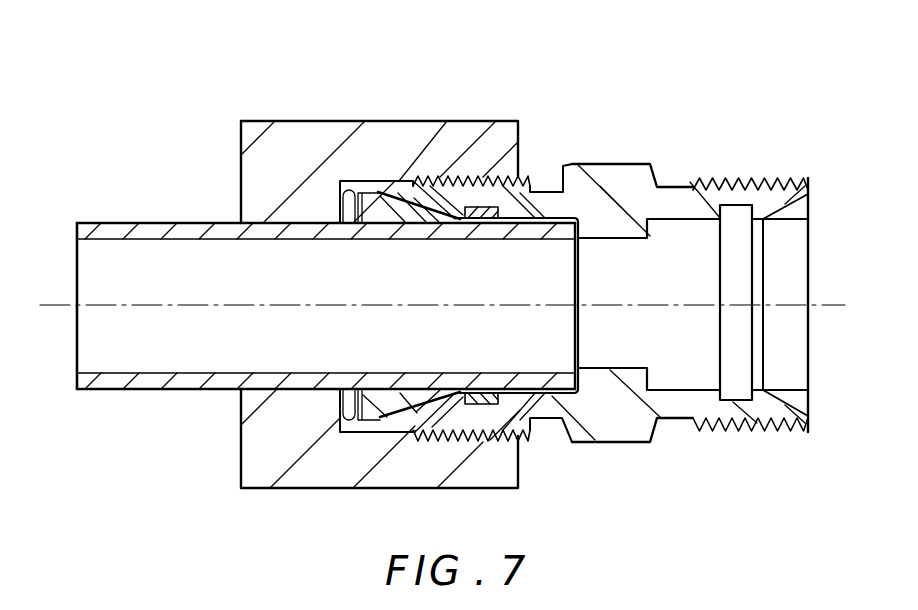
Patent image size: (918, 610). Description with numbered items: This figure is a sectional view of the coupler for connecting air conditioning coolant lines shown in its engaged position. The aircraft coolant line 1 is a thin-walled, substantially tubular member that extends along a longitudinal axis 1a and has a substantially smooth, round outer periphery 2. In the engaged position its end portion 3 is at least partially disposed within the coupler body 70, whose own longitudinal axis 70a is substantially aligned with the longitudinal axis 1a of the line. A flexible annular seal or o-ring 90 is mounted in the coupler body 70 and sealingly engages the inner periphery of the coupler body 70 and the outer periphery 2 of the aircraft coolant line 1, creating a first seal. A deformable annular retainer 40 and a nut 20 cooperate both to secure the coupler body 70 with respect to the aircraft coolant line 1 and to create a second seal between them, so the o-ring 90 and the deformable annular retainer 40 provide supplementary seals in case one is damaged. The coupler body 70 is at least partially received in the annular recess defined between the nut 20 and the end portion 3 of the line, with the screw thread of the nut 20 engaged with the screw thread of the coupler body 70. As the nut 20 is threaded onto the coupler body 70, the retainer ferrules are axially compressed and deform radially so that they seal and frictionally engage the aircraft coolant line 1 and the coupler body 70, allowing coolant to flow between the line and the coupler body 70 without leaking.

The aircraft coolant line 1 is at (77, 256).
The longitudinal axis 1a is at (128, 300).
The outer periphery 2 is at (141, 222).
The end portion 3 is at (540, 218).
The nut 20 is at (306, 118).
The deformable annular retainer 40 is at (374, 191).
The coupler body 70 is at (621, 161).
The longitudinal axis 70a is at (777, 303).
The o-ring 90 is at (476, 212).